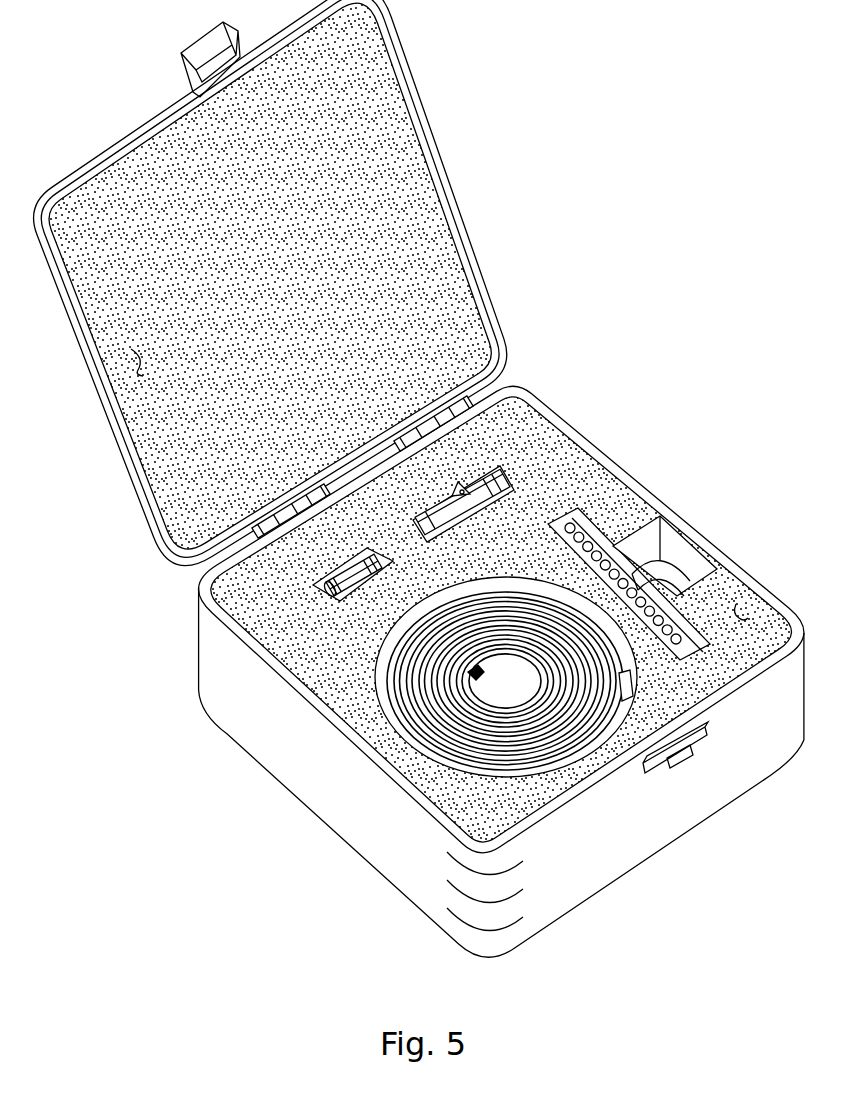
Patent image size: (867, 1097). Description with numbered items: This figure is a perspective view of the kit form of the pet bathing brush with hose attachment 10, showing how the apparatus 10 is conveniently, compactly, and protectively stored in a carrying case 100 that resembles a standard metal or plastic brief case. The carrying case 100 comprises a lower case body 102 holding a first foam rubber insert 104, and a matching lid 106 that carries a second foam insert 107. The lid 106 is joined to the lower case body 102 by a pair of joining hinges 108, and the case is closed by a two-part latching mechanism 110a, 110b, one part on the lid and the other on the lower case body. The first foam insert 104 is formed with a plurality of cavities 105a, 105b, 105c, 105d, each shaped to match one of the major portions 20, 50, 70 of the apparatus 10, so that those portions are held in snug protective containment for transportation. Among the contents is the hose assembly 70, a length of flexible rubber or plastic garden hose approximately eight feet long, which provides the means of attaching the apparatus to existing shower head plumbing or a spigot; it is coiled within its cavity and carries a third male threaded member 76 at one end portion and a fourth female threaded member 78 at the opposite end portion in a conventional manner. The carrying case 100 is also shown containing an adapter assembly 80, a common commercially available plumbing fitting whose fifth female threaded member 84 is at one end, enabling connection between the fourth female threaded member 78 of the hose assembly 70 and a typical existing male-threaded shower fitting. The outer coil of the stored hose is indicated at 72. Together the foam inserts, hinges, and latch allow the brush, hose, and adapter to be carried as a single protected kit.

The pet bathing brush with hose attachment 10 is at (675, 128).
The carrying case 100 is at (478, 126).
The lower case body 102 is at (756, 779).
The first foam rubber insert 104 is at (742, 607).
The cavity 105a is at (337, 600).
The cavity 105b is at (493, 466).
The cavity 105c is at (645, 523).
The cavity 105d is at (573, 762).
The lid 106 is at (140, 495).
The second foam insert 107 is at (130, 366).
The joining hinges 108 is at (465, 395).
The latching mechanism part 110a is at (203, 67).
The latching mechanism part 110b is at (680, 764).
The major portion of the apparatus 20 is at (673, 560).
The major portion of the apparatus 50 is at (502, 472).
The hose assembly 70 is at (461, 729).
The hose outer coil 72 is at (445, 748).
The third male threaded member 76 is at (482, 676).
The fourth female threaded member 78 is at (632, 676).
The adapter assembly 80 is at (326, 597).
The fifth female threaded member 84 is at (328, 586).